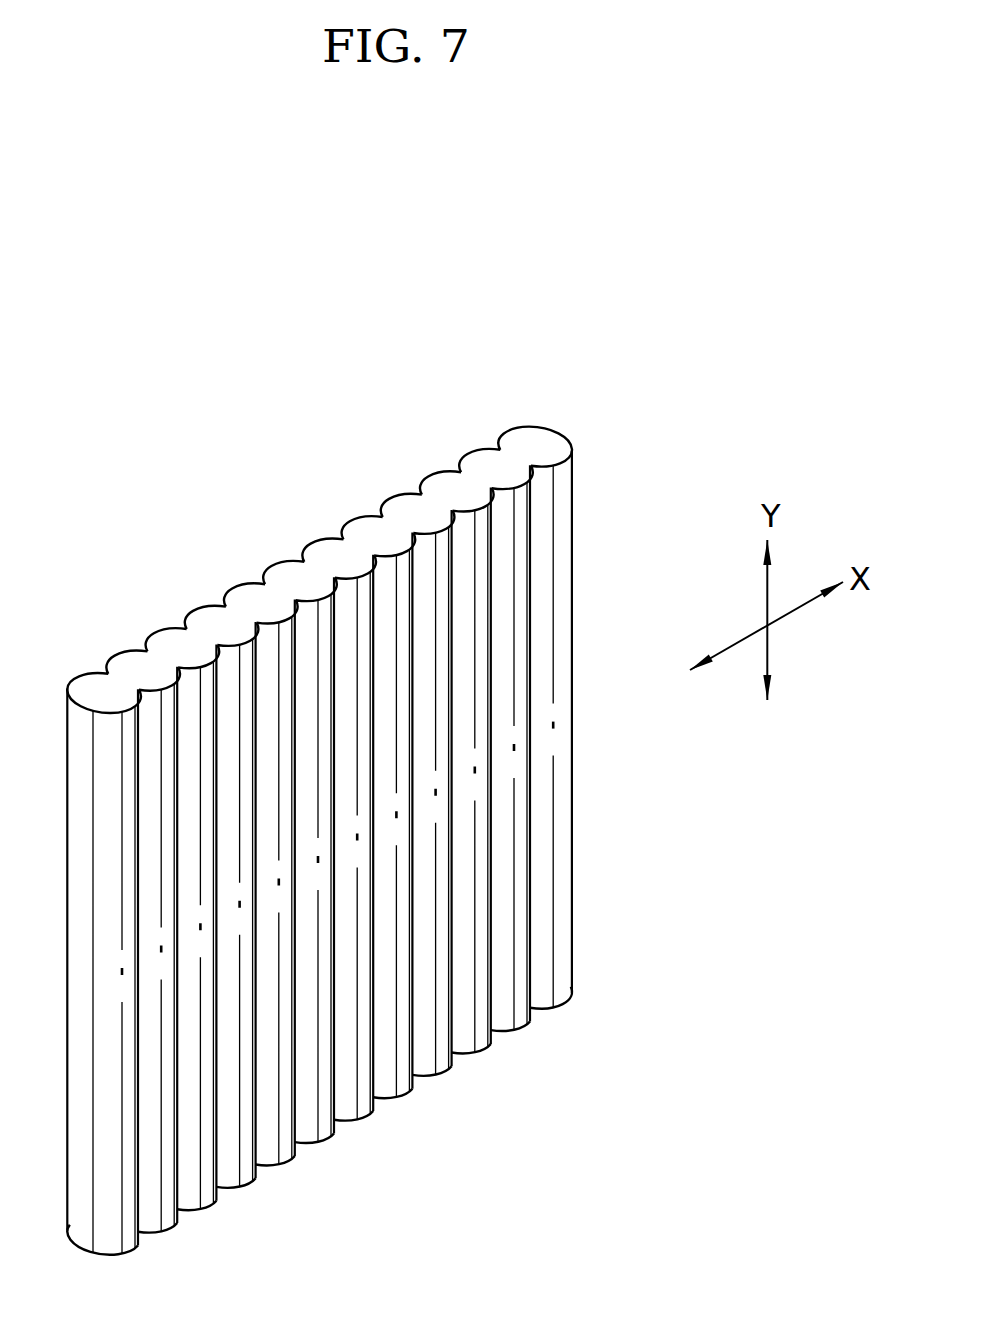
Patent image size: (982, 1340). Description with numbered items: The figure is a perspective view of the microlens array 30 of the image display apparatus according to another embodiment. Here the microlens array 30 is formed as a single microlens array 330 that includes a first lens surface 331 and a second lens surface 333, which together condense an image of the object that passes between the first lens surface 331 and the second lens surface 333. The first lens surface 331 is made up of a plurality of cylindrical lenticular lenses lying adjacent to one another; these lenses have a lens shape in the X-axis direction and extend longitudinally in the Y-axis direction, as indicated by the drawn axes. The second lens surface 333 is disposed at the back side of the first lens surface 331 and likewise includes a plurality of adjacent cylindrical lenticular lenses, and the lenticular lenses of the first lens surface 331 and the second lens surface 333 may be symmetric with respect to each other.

The microlens array 30 is at (384, 767).
The single microlens array 330 is at (689, 361).
The first lens surface 331 is at (503, 447).
The second lens surface 333 is at (575, 452).